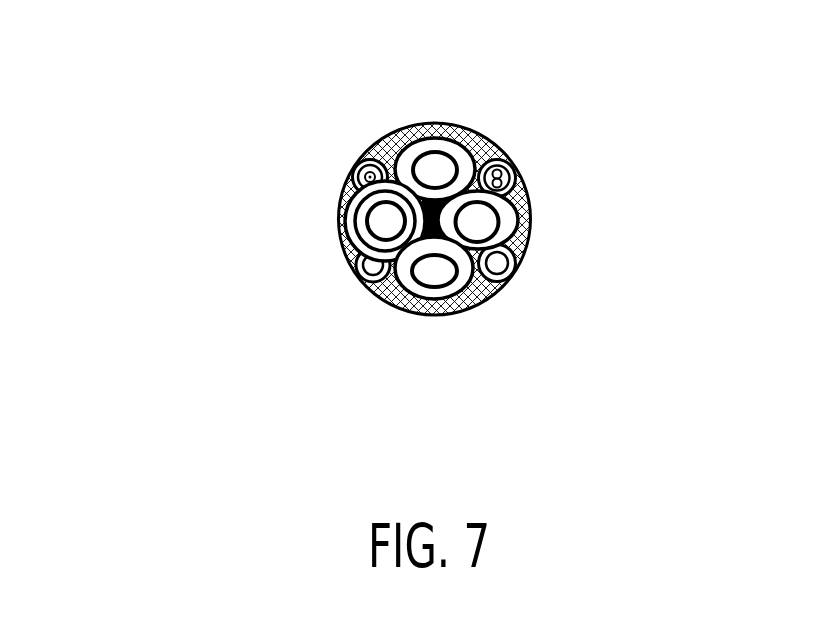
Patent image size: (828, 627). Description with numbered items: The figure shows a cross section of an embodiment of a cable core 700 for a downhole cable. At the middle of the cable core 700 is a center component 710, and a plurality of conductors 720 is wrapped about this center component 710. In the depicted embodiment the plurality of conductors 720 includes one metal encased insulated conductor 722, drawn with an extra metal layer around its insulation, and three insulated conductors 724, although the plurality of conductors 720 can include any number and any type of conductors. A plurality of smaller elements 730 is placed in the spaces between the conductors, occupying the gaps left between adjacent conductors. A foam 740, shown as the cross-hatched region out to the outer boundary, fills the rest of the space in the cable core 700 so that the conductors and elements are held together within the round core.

The cable core 700 is at (412, 244).
The center component 710 is at (427, 195).
The plurality of conductors 720 is at (432, 297).
The metal encased insulated conductor 722 is at (356, 233).
The insulated conductor 724 is at (523, 240).
The elements 730 is at (516, 172).
The foam 740 is at (528, 208).